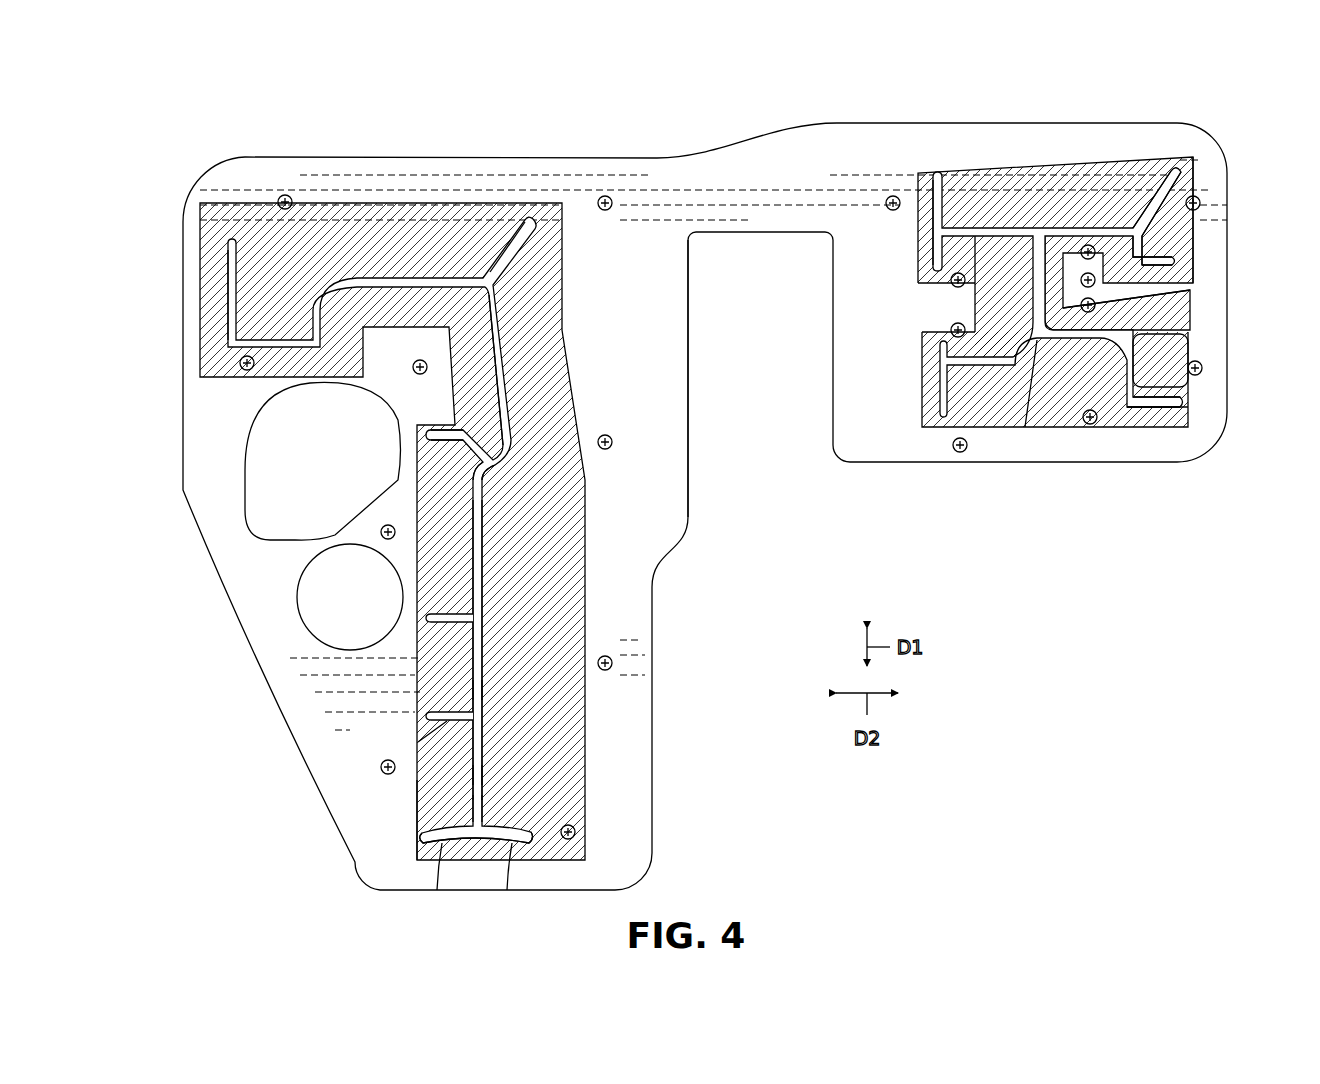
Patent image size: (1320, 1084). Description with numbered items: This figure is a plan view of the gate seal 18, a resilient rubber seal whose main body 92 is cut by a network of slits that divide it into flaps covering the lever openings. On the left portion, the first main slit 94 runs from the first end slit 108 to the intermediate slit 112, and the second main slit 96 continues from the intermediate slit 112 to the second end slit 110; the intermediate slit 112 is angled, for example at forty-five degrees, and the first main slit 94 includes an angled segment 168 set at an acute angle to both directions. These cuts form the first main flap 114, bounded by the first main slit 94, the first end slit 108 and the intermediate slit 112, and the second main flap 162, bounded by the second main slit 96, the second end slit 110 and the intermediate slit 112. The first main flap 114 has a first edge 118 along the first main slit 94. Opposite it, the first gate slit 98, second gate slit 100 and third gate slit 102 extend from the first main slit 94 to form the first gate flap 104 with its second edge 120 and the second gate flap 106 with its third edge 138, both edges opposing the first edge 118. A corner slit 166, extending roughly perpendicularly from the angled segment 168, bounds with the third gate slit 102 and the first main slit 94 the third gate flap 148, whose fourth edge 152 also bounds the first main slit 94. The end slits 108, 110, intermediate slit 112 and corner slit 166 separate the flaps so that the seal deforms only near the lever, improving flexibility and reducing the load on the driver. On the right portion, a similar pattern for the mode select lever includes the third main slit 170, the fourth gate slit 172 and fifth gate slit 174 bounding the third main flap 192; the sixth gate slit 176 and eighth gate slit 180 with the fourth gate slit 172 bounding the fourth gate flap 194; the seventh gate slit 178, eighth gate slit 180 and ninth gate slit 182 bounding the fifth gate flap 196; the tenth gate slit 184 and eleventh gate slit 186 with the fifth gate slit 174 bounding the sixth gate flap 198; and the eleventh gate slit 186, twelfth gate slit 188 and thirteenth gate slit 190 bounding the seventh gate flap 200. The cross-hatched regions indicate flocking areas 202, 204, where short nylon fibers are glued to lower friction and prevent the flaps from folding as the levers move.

The gate seal 18 is at (688, 118).
The main body 92 is at (692, 405).
The first main slit 94 is at (490, 577).
The second main slit 96 is at (418, 268).
The first gate slit 98 is at (444, 846).
The second gate slit 100 is at (420, 742).
The third gate slit 102 is at (425, 618).
The first gate flap 104 is at (447, 800).
The second gate flap 106 is at (447, 672).
The first end slit 108 is at (514, 846).
The second end slit 110 is at (228, 290).
The intermediate slit 112 is at (519, 235).
The first main flap 114 is at (575, 500).
The first edge 118 is at (483, 803).
The second edge 120 is at (478, 773).
The third edge 138 is at (474, 687).
The third gate flap 148 is at (463, 514).
The fourth edge 152 is at (474, 600).
The second main flap 162 is at (336, 240).
The corner slit 166 is at (420, 452).
The angled segment 168 is at (500, 463).
The third main slit 170 is at (1024, 315).
The fourth gate slit 172 is at (1025, 427).
The fifth gate slit 174 is at (1040, 233).
The sixth gate slit 176 is at (942, 427).
The seventh gate slit 178 is at (1188, 330).
The eighth gate slit 180 is at (1135, 385).
The ninth gate slit 182 is at (1165, 407).
The tenth gate slit 184 is at (937, 200).
The eleventh gate slit 186 is at (1158, 180).
The twelfth gate slit 188 is at (1136, 232).
The thirteenth gate slit 190 is at (1168, 262).
The third main flap 192 is at (1000, 283).
The fourth gate flap 194 is at (988, 407).
The fifth gate flap 196 is at (1170, 353).
The sixth gate flap 198 is at (985, 185).
The seventh gate flap 200 is at (1180, 190).
The flocking area 202 is at (570, 350).
The flocking area 204 is at (1108, 156).